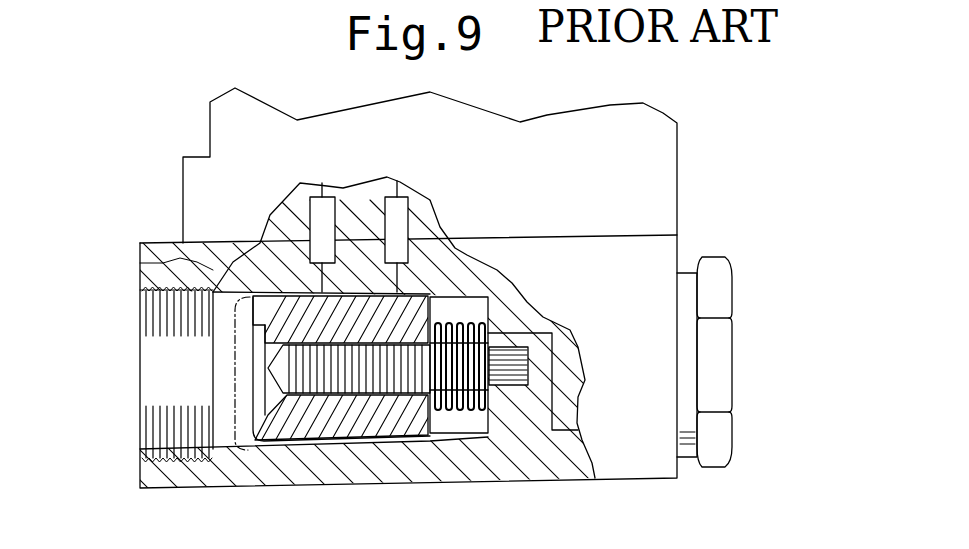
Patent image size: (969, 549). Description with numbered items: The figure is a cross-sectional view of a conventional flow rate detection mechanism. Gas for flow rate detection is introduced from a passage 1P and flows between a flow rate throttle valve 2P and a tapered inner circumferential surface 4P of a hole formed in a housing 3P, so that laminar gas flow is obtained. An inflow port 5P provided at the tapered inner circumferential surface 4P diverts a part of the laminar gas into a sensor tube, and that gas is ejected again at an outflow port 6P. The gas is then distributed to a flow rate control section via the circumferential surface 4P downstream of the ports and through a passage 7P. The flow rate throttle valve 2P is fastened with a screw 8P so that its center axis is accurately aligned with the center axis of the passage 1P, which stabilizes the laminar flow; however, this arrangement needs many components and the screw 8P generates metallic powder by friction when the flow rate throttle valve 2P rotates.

The passage 1P is at (159, 383).
The flow rate throttle valve 2P is at (319, 423).
The housing 3P is at (484, 316).
The tapered inner circumferential surface 4P is at (387, 414).
The inflow port 5P is at (216, 207).
The outflow port 6P is at (461, 218).
The passage 7P is at (518, 343).
The screw 8P is at (277, 351).